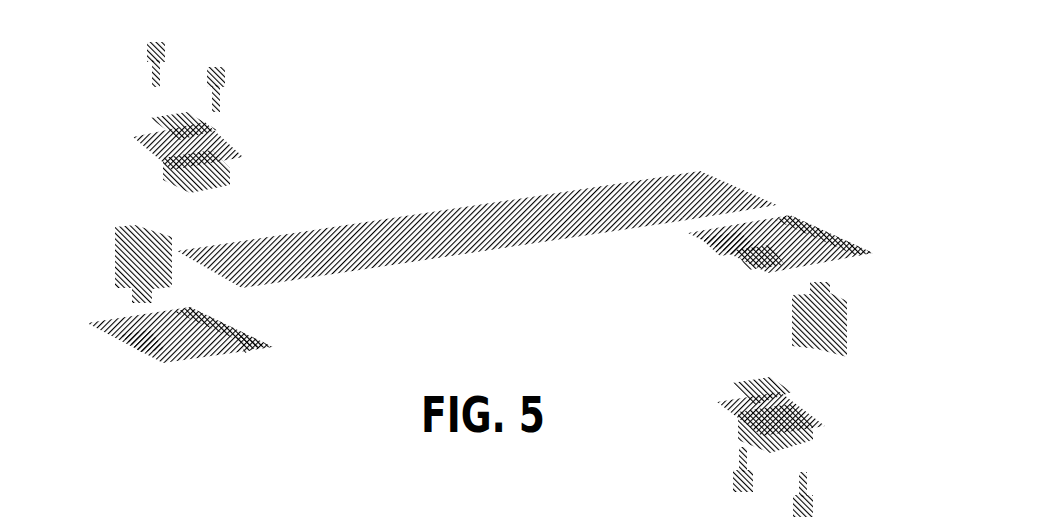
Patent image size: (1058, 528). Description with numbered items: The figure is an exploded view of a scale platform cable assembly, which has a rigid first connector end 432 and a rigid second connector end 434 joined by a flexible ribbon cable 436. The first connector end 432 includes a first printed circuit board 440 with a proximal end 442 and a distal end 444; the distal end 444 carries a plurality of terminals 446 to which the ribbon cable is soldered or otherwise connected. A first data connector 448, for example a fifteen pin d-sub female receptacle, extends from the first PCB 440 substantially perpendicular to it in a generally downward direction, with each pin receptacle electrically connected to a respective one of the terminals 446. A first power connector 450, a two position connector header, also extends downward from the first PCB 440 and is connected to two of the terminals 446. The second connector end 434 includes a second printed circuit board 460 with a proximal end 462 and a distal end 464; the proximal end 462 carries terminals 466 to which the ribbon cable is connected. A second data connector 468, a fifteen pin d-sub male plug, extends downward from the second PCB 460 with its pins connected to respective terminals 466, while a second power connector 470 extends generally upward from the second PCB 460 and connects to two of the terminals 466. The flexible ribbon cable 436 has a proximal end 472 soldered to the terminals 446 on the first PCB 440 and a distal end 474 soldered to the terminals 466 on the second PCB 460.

The first connector end 432 is at (762, 214).
The second connector end 434 is at (209, 390).
The flexible ribbon cable 436 is at (471, 212).
The first printed circuit board 440 is at (808, 266).
The proximal end 442 is at (856, 211).
The distal end 444 is at (708, 281).
The terminals 446 is at (674, 261).
The first data connector 448 is at (726, 447).
The first power connector 450 is at (871, 338).
The second printed circuit board 460 is at (187, 387).
The proximal end 462 is at (297, 372).
The distal end 464 is at (98, 371).
The terminals 466 is at (281, 331).
The second data connector 468 is at (231, 117).
The second power connector 470 is at (102, 264).
The proximal end 472 is at (715, 153).
The distal end 474 is at (201, 229).